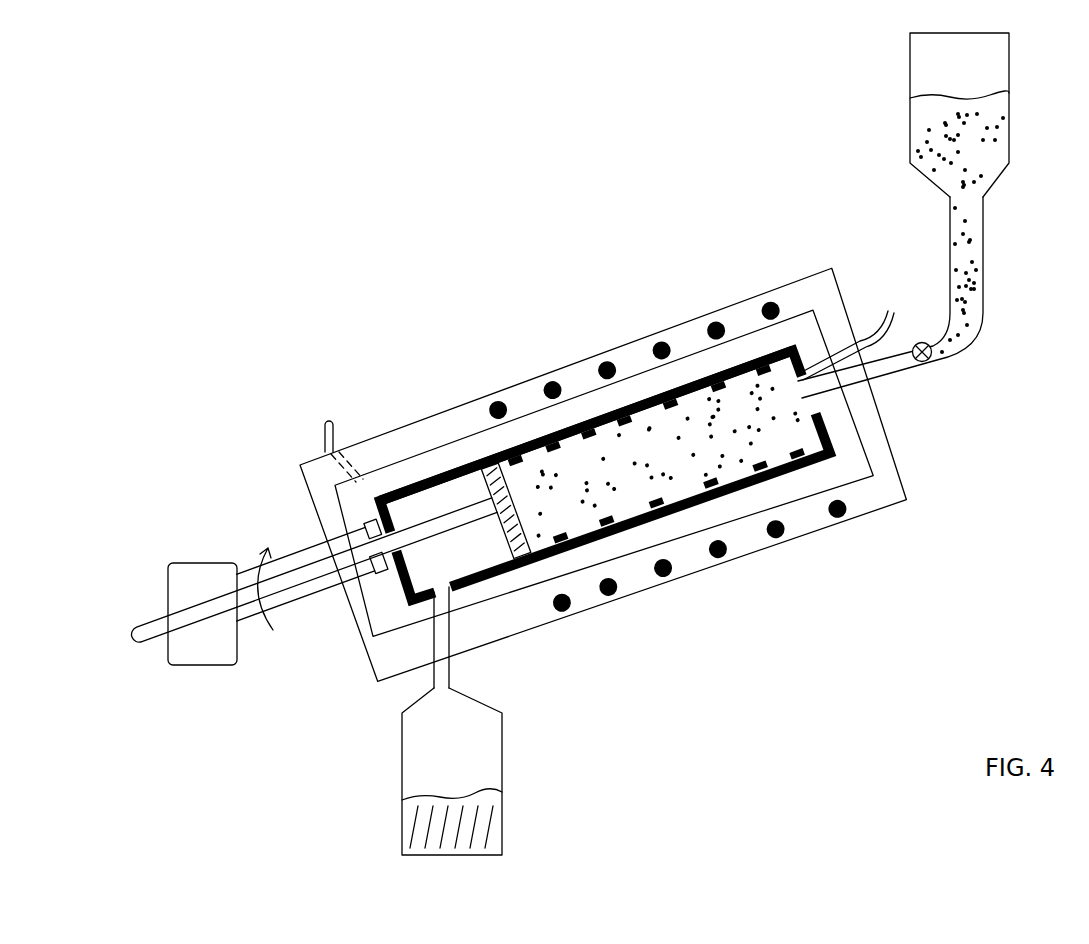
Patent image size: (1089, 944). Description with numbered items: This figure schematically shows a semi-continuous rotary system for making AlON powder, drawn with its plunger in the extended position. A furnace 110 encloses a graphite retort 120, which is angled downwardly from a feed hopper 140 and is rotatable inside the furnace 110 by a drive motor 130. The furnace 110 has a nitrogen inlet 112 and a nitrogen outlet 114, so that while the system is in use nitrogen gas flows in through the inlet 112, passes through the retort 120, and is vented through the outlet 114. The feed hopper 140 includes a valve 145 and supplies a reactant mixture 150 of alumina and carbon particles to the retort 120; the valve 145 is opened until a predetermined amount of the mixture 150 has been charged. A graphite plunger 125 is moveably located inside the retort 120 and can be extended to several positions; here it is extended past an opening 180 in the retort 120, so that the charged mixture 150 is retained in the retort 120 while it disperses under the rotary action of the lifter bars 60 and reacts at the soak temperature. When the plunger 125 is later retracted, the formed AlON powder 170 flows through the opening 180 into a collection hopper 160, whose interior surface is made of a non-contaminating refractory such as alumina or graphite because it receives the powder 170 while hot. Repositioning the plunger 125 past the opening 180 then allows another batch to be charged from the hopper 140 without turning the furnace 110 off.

The lifter bars 60 is at (827, 441).
The furnace 110 is at (753, 547).
The nitrogen inlet 112 is at (893, 302).
The nitrogen outlet 114 is at (334, 423).
The graphite retort 120 is at (583, 418).
The graphite plunger 125 is at (480, 457).
The drive motor 130 is at (212, 660).
The feed hopper 140 is at (1010, 52).
The valve 145 is at (931, 359).
The reactant mixture 150 is at (1000, 148).
The collection hopper 160 is at (504, 746).
The AlON powder 170 is at (498, 842).
The opening 180 is at (438, 597).